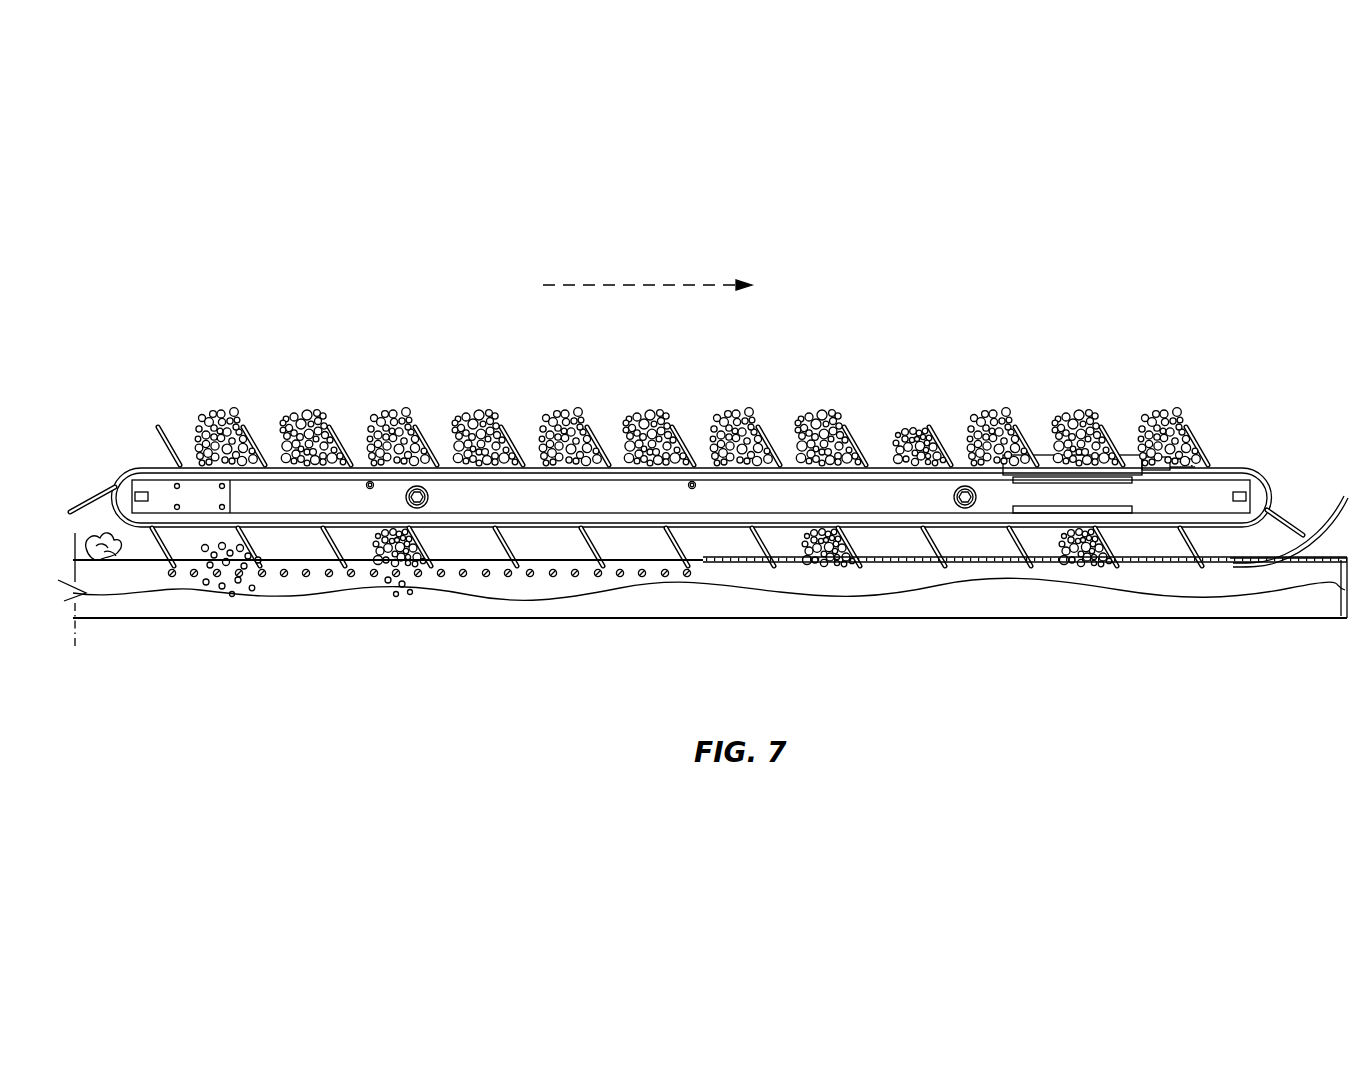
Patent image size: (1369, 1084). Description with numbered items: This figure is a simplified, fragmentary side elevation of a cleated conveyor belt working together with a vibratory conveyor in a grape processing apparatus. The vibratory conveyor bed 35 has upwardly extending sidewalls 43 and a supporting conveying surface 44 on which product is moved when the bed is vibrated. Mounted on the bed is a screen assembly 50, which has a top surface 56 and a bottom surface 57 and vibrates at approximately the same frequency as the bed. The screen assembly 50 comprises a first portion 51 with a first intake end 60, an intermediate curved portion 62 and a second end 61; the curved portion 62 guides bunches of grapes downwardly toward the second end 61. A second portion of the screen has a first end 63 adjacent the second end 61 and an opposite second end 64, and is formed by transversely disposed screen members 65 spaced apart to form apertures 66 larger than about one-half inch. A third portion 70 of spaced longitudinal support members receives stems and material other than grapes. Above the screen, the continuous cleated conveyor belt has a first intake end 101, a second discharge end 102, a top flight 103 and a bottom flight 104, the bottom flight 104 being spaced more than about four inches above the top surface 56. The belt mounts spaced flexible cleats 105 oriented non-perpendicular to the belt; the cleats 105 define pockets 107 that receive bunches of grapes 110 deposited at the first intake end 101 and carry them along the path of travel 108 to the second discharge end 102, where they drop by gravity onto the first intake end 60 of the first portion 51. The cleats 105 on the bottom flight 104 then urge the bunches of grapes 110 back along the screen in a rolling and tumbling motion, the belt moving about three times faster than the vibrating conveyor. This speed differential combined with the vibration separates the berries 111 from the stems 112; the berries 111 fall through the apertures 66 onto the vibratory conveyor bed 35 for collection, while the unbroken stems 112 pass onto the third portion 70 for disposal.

The vibratory conveyor bed 35 is at (1233, 630).
The sidewalls 43 is at (1303, 597).
The supporting conveying surface 44 is at (977, 615).
The screen assembly 50 is at (372, 597).
The first portion 51 is at (1133, 570).
The top surface 56 is at (308, 560).
The bottom surface 57 is at (330, 578).
The first intake end 60 is at (1342, 498).
The second end 61 is at (688, 580).
The intermediate curved portion 62 is at (1286, 530).
The first end 63 is at (665, 578).
The second end 64 is at (168, 578).
The screen members 65 is at (463, 578).
The apertures 66 is at (553, 578).
The third portion 70 is at (108, 570).
The first intake end 101 is at (135, 467).
The second discharge end 102 is at (1237, 467).
The top flight 103 is at (786, 468).
The bottom flight 104 is at (873, 522).
The flexible cleats 105 is at (255, 450).
The pockets 107 is at (903, 425).
The path of travel 108 is at (651, 283).
The bunches of grapes 110 is at (736, 425).
The berries 111 is at (242, 588).
The stems 112 is at (80, 518).